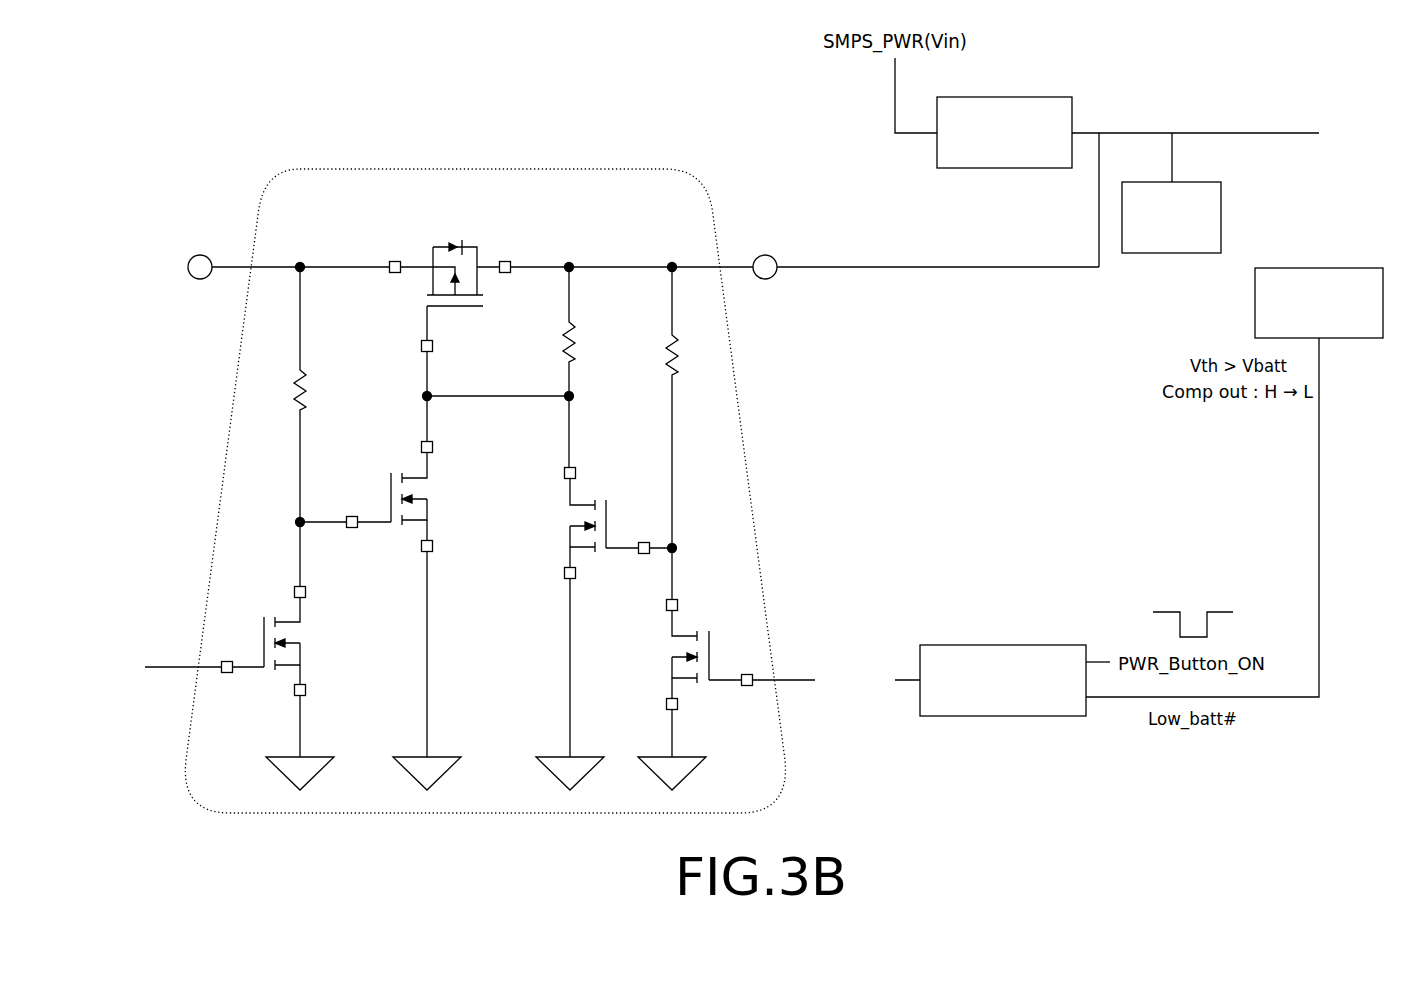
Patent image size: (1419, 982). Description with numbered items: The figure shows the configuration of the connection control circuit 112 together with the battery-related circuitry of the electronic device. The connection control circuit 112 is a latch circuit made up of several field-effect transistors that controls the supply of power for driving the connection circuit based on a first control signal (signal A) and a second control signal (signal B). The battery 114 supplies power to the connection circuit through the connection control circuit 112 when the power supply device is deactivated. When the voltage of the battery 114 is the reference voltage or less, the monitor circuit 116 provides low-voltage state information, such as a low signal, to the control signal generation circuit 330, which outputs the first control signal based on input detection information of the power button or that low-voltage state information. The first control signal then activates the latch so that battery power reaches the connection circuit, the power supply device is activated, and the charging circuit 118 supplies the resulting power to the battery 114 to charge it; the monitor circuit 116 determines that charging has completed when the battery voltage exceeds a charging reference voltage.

The connection control circuit 112 is at (640, 168).
The battery 114 is at (1194, 182).
The monitor circuit 116 is at (1358, 268).
The charging circuit 118 is at (1032, 97).
The control signal generation circuit 330 is at (1048, 645).